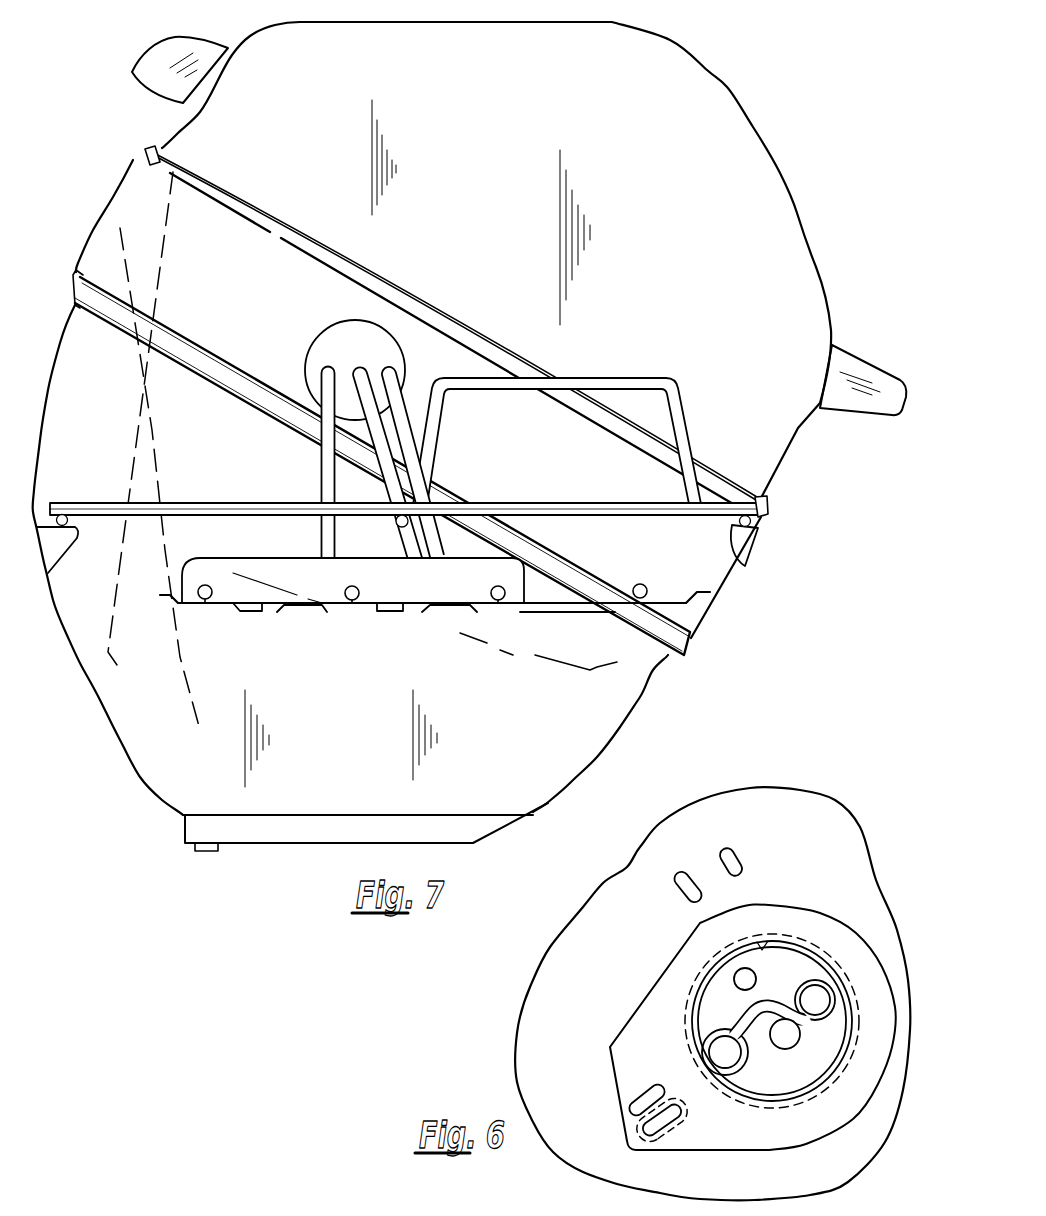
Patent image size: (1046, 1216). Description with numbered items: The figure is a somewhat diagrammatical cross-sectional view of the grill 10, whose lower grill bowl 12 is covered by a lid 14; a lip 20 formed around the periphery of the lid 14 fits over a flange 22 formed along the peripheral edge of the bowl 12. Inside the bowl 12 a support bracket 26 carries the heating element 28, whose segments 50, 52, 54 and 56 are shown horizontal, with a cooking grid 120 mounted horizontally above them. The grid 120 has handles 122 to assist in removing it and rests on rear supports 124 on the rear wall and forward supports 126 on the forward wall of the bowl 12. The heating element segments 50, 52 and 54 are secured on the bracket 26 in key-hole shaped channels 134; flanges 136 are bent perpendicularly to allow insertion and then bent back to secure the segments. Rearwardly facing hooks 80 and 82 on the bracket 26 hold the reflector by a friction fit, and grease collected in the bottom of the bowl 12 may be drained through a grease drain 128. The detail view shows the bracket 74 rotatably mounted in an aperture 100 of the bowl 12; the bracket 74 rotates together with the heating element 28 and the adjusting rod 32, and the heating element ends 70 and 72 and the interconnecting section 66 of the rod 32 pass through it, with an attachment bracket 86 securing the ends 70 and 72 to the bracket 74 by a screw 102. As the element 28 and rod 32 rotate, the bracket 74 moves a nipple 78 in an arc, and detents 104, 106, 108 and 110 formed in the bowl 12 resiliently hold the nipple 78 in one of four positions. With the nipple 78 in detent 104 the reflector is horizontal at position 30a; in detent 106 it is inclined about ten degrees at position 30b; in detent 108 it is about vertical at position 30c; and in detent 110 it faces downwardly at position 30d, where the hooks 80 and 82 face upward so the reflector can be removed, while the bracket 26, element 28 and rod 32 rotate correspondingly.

In FIG. 7, the grill 10 is at (470, 432).
In FIG. 7, the lower grill bowl 12 is at (618, 733).
In FIG. 6, the lower grill bowl 12 is at (582, 1030).
In FIG. 7, the lid 14 is at (773, 230).
In FIG. 7, the lip 20 is at (147, 154).
In FIG. 7, the flange 22 is at (173, 173).
In FIG. 7, the support bracket 26 is at (514, 569).
In FIG. 7, the heating element 28 is at (326, 378).
In FIG. 7, the reflector horizontal position 30a is at (705, 624).
In FIG. 7, the reflector inclined position 30b is at (551, 662).
In FIG. 7, the reflector vertical position 30c is at (151, 484).
In FIG. 7, the reflector downward-facing position 30d is at (162, 276).
In FIG. 7, the adjusting rod 32 is at (362, 372).
In FIG. 7, the heating element segment 50 is at (222, 577).
In FIG. 7, the heating element segment 52 is at (356, 585).
In FIG. 7, the heating element segment 54 is at (496, 586).
In FIG. 7, the heating element segment 56 is at (641, 584).
In FIG. 6, the interconnecting section 66 is at (794, 1037).
In FIG. 6, the heating element end 70 is at (827, 1004).
In FIG. 6, the heating element end 72 is at (710, 1046).
In FIG. 7, the bracket 74 is at (362, 347).
In FIG. 6, the bracket 74 is at (821, 965).
In FIG. 6, the nipple 78 is at (692, 1118).
In FIG. 7, the rearwardly facing hook 80 is at (251, 615).
In FIG. 7, the rearwardly facing hook 82 is at (364, 613).
In FIG. 6, the attachment bracket 86 is at (814, 971).
In FIG. 6, the aperture 100 is at (770, 942).
In FIG. 6, the screw 102 is at (739, 972).
In FIG. 6, the detent 104 is at (645, 1121).
In FIG. 6, the detent 106 is at (630, 1098).
In FIG. 6, the detent 108 is at (676, 883).
In FIG. 6, the detent 110 is at (739, 852).
In FIG. 7, the cooking grid 120 is at (218, 502).
In FIG. 7, the handles 122 is at (594, 378).
In FIG. 7, the rear supports 124 is at (67, 549).
In FIG. 7, the forward supports 126 is at (748, 567).
In FIG. 7, the grease drain 128 is at (206, 853).
In FIG. 7, the key-hole shaped channels 134 is at (203, 601).
In FIG. 7, the flanges 136 is at (218, 604).